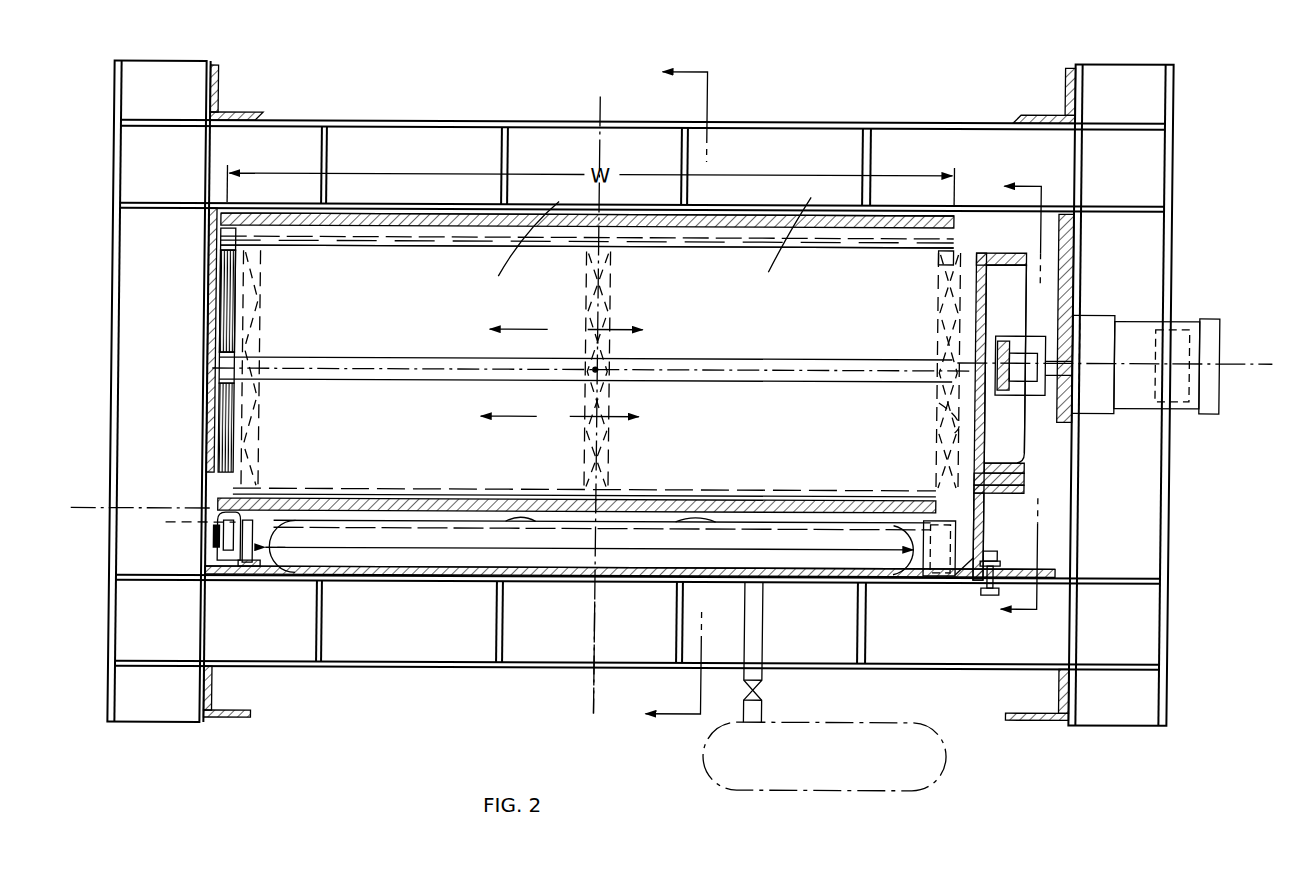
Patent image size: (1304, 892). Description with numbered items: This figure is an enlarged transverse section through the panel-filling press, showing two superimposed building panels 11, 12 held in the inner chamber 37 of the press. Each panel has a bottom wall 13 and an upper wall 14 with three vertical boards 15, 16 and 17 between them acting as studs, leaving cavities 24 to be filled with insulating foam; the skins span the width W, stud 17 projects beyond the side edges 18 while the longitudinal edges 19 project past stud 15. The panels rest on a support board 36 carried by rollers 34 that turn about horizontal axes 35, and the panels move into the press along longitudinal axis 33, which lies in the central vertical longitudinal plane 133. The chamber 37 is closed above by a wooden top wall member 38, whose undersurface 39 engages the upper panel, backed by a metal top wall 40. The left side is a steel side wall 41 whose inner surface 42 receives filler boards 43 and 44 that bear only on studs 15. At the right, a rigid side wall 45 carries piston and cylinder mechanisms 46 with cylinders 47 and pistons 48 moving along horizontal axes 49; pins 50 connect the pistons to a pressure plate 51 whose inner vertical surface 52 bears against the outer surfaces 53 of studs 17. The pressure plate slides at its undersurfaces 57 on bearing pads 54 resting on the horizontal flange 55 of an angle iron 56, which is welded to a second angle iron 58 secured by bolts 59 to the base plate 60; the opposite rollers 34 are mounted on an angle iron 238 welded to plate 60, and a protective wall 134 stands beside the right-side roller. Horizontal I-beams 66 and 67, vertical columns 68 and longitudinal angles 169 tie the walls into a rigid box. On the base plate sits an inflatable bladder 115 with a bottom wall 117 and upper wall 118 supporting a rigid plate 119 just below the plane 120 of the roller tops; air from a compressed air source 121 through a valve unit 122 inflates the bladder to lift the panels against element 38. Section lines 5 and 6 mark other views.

The section line 5- 5 is at (676, 396).
The section line 6- 6 is at (1020, 408).
The upper panel 11 is at (566, 329).
The lower panel 12 is at (560, 416).
The bottom wall 13 is at (365, 358).
The upper wall 14 is at (380, 246).
The vertical board 15 is at (262, 300).
The vertical board 16 is at (612, 302).
The vertical board 17 is at (940, 286).
The side edges 18 is at (955, 245).
The longitudinal edges 19 is at (232, 232).
The cavities 24 is at (668, 229).
The longitudinal axis 33 is at (600, 368).
The rollers 34 is at (235, 542).
The horizontal axes 35 is at (185, 525).
The support board 36 is at (530, 497).
The inner chamber 37 is at (870, 240).
The top wall member 38 is at (470, 212).
The undersurface 39 is at (420, 213).
The metal top wall 40 is at (735, 123).
The side wall 41 is at (222, 285).
The inner surface 42 is at (212, 265).
The filler board 43 is at (228, 320).
The filler board 44 is at (228, 412).
The side wall 45 is at (1068, 250).
The piston and cylinder mechanism 46 is at (1168, 320).
The cylinder 47 is at (1100, 312).
The piston 48 is at (1160, 405).
The horizontal axis 49 is at (1228, 362).
The pin 50 is at (1026, 320).
The pressure plate 51 is at (988, 258).
The inner vertical surface 52 is at (982, 283).
The outer surfaces 53 is at (945, 420).
The bearing pads 54 is at (1030, 476).
The horizontal flange 55 is at (960, 327).
The angle iron 56 is at (980, 505).
The undersurfaces 57 is at (990, 465).
The angle iron 58 is at (972, 570).
The bolts 59 is at (992, 590).
The base plate 60 is at (848, 578).
The I-beams 66 is at (635, 122).
The I-beams 67 is at (455, 650).
The columns 68 is at (108, 305).
The inflatable bladder 115 is at (640, 530).
The bottom wall 117 is at (622, 574).
The upper wall 118 is at (690, 524).
The rigid plate 119 is at (515, 525).
The plane 120 is at (135, 500).
The source of compressed air 121 is at (950, 760).
The valve unit 122 is at (785, 696).
The central vertical longitudinal plane 133 is at (592, 672).
The protective wall 134 is at (915, 536).
The longitudinal angles 169 is at (220, 80).
The angle iron 238 is at (262, 555).